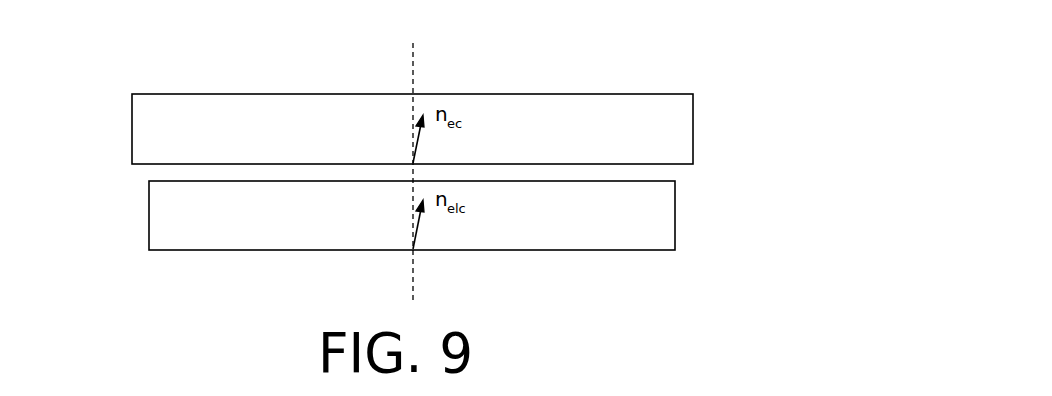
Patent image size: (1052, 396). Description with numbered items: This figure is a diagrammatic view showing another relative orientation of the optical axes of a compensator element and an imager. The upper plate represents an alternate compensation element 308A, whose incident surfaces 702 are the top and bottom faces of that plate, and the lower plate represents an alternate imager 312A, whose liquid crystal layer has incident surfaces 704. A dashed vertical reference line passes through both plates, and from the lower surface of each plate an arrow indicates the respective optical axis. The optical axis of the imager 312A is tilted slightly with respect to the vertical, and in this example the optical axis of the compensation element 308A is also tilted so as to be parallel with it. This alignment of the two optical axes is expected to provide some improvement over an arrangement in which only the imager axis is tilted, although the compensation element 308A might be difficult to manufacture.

The alternate compensation element 308A is at (132, 129).
The alternate imager 312A is at (675, 212).
The incident surfaces of compensation element 702 is at (263, 94).
The incident surfaces of liquid crystal layer 704 is at (307, 181).